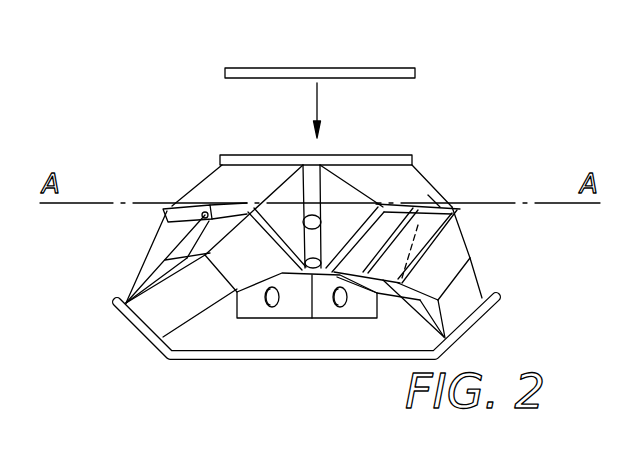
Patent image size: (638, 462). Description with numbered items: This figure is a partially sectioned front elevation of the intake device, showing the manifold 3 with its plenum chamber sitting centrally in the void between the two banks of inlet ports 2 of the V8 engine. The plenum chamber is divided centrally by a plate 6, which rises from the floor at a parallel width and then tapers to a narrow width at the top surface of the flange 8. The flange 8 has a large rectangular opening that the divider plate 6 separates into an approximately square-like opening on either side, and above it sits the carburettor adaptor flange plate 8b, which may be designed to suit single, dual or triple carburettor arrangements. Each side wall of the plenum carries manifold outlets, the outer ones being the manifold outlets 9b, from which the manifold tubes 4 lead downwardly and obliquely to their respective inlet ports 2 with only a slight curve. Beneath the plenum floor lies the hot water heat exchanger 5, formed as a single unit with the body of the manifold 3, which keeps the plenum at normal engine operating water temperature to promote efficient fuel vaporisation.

The inlet port 2 is at (477, 334).
The manifold 3 is at (482, 183).
The manifold tube 4 is at (470, 258).
The hot water heat exchanger 5 is at (292, 305).
The divider plate 6 is at (317, 155).
The flange 8 is at (405, 155).
The carburettor adaptor flange plate 8b is at (380, 68).
The manifold outlet 9b is at (376, 244).